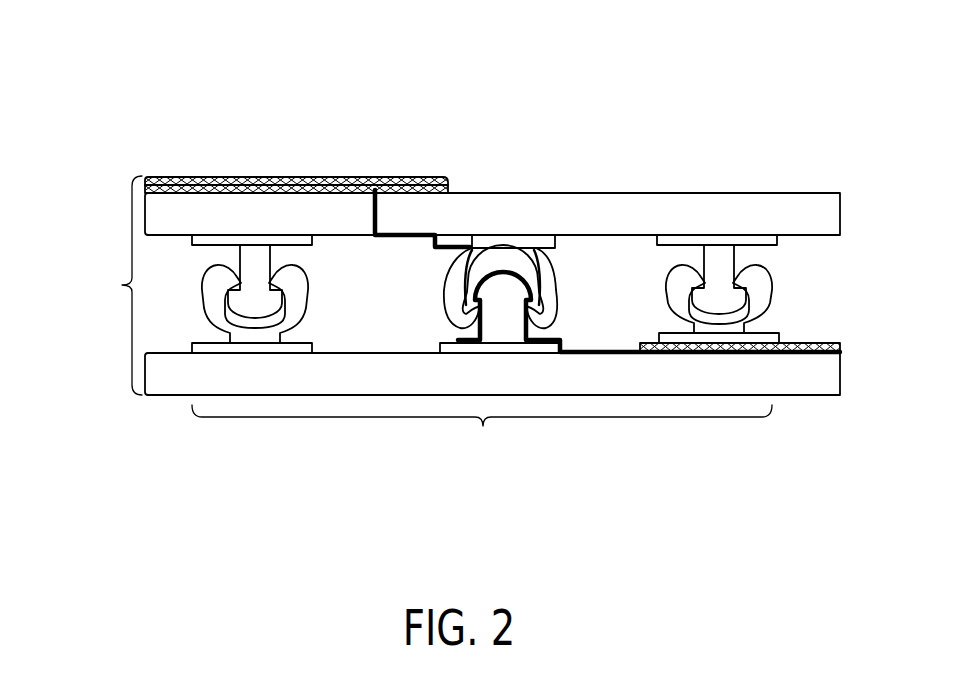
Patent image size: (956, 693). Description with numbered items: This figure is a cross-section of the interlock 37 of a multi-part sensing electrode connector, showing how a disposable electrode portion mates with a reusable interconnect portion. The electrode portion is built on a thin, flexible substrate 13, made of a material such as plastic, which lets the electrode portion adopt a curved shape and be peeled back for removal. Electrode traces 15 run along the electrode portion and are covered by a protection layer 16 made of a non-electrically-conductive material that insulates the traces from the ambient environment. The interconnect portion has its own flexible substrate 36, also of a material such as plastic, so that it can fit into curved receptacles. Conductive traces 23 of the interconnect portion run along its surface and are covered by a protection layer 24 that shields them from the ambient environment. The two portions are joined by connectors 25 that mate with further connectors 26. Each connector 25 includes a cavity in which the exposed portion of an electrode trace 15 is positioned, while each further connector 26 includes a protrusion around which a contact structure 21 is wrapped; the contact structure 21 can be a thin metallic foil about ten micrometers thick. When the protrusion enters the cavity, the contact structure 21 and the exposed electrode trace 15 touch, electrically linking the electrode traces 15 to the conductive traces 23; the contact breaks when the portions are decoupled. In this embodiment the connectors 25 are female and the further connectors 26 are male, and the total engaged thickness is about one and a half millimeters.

The interlock 37 is at (173, 97).
The flexible substrate 13 is at (699, 203).
The electrode trace 15 is at (252, 190).
The protection layer 16 is at (322, 179).
The contact structure 21 is at (504, 258).
The connector 25 is at (542, 273).
The conductive trace 23 is at (597, 352).
The protection layer 24 is at (785, 343).
The further connector 26 is at (447, 345).
The substrate 36 is at (812, 385).